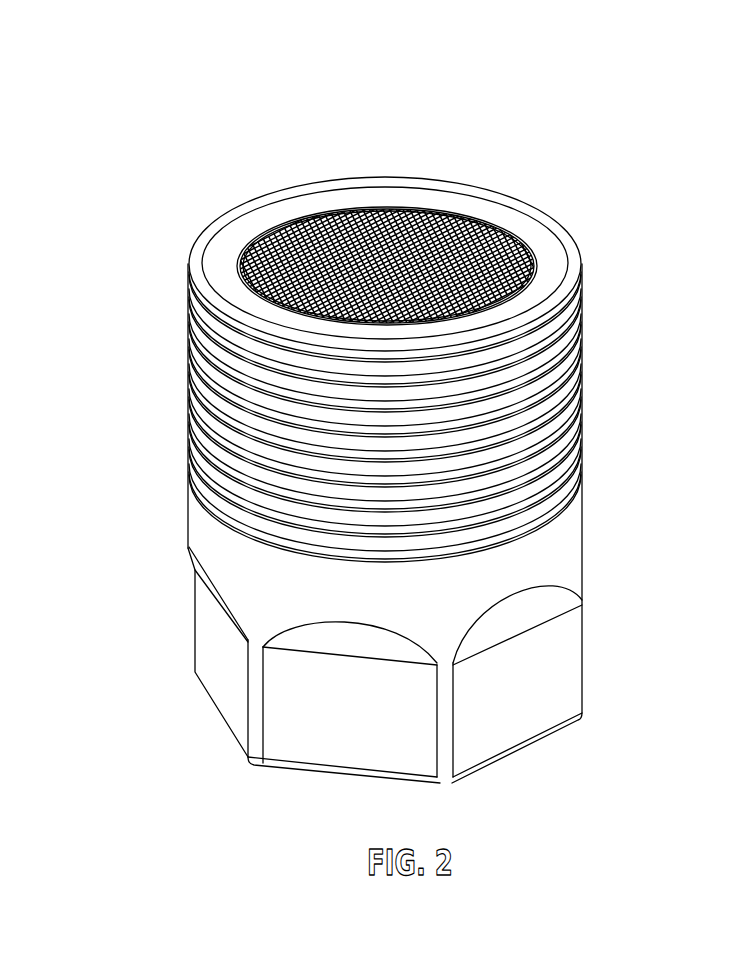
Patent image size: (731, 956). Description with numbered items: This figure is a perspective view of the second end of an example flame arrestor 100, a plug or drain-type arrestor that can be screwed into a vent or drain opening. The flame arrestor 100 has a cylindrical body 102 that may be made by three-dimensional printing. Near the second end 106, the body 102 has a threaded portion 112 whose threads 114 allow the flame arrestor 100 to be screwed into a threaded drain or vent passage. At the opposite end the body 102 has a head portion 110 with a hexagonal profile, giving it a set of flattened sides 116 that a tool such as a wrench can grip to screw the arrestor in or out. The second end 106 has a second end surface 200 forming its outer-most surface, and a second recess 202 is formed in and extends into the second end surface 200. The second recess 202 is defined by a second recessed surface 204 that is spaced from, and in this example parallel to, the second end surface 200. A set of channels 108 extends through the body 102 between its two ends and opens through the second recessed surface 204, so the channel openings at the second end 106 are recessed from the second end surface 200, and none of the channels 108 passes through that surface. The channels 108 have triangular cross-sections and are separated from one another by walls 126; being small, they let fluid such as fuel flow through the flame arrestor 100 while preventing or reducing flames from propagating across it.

The flame arrestor 100 is at (99, 70).
The body 102 is at (203, 533).
The second end 106 is at (284, 163).
The channels 108 is at (446, 201).
The head portion 110 is at (600, 780).
The threaded portion 112 is at (600, 560).
The threads 114 is at (230, 413).
The flattened sides 116 is at (220, 662).
The walls 126 is at (473, 225).
The second end surface 200 is at (230, 233).
The second recess 202 is at (342, 190).
The second recessed surface 204 is at (402, 213).